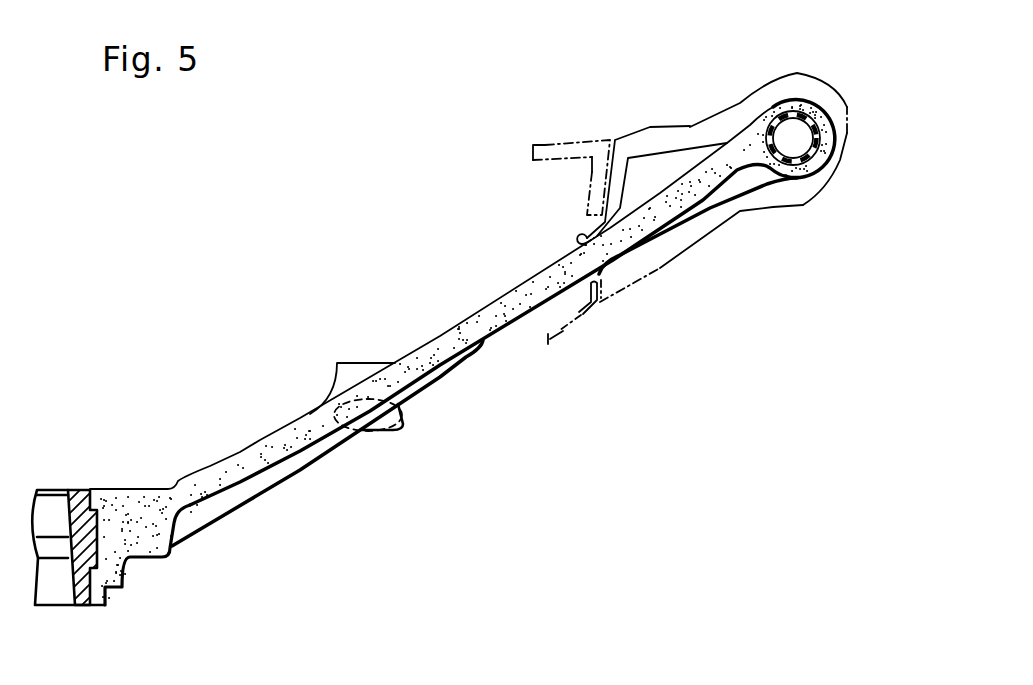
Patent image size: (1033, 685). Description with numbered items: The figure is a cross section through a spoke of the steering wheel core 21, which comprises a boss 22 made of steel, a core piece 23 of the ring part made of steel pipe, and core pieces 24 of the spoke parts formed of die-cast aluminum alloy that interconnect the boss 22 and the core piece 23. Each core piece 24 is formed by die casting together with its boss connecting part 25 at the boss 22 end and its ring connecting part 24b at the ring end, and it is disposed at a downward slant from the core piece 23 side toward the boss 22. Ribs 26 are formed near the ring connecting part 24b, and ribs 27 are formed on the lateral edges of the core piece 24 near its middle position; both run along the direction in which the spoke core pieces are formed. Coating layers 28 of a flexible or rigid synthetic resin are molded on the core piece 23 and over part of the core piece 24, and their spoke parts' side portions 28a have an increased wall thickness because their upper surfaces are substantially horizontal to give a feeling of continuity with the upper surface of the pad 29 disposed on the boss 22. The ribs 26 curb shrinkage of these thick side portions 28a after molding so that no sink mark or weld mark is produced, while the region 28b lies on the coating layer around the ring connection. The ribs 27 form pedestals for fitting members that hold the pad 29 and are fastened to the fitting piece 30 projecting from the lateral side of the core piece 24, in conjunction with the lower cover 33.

The steering wheel core 21 is at (309, 201).
The boss 22 is at (77, 490).
The core piece of ring part 23 is at (812, 112).
The core piece of spoke part 24 is at (503, 333).
The ring connecting part 24b is at (795, 100).
The boss connecting part 25 is at (132, 495).
The rib 26 is at (640, 177).
The rib 27 is at (352, 373).
The coating layer 28 is at (797, 197).
The spoke part's side portion of coating layer 28a is at (698, 128).
The side edge of bracket 28b is at (845, 118).
The pad 29 is at (547, 143).
The fitting piece 30 is at (403, 432).
The lower cover 33 is at (555, 343).